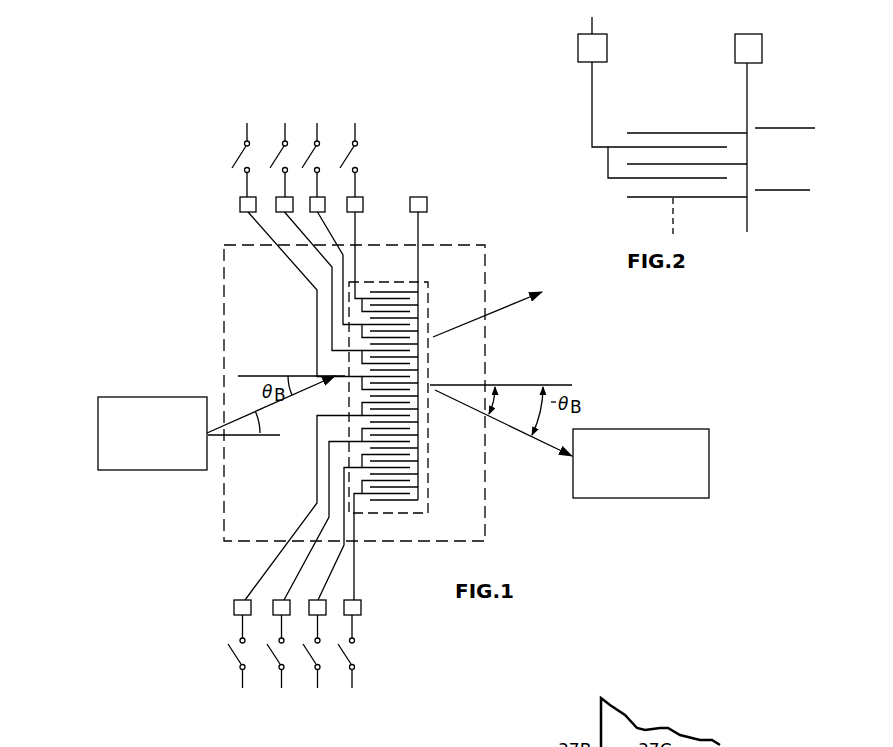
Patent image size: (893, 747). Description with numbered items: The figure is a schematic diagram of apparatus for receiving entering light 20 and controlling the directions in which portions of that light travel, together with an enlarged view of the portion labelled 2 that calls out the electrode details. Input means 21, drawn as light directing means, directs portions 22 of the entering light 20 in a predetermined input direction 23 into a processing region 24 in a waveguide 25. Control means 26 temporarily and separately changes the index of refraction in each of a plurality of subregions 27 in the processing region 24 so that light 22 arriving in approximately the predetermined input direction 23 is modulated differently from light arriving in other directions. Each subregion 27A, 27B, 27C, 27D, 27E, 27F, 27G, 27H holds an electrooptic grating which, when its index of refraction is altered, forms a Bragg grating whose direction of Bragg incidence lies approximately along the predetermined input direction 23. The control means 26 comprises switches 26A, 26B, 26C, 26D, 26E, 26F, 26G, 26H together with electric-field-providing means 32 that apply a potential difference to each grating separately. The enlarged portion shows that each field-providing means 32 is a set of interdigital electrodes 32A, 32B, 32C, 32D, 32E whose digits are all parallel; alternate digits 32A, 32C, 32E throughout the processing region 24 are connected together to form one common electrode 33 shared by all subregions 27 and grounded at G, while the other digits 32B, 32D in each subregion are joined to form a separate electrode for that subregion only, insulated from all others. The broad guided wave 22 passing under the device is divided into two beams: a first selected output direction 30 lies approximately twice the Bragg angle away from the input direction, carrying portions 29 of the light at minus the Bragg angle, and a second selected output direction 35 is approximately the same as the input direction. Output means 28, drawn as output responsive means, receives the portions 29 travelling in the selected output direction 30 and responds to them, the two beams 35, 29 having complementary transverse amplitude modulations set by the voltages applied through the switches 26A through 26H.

In FIG. 1, the portion of FIG. 1 2 is at (366, 175).
In FIG. 1, the entering light 20 is at (96, 433).
In FIG. 1, the input means 21 is at (162, 397).
In FIG. 1, the light portions 22 is at (258, 413).
In FIG. 1, the predetermined input direction 23 is at (270, 423).
In FIG. 1, the processing region 24 is at (400, 281).
In FIG. 1, the waveguide 25 is at (268, 320).
In FIG. 1, the control means 26 is at (286, 404).
In FIG. 1, the switch 26A is at (407, 123).
In FIG. 1, the switch 26B is at (327, 155).
In FIG. 1, the switch 26C is at (268, 150).
In FIG. 1, the switch 26D is at (233, 164).
In FIG. 1, the switch 26E is at (238, 668).
In FIG. 1, the switch 26F is at (267, 644).
In FIG. 1, the switch 26G is at (303, 644).
In FIG. 1, the switch 26H is at (343, 658).
In FIG. 1, the subregions 27 is at (408, 291).
In FIG. 1, the subregion 27A is at (467, 314).
In FIG. 2, the subregion 27A is at (775, 123).
In FIG. 1, the subregion 27B is at (458, 332).
In FIG. 2, the subregion 27B is at (738, 216).
In FIG. 1, the subregion 27C is at (468, 365).
In FIG. 1, the subregion 27D is at (468, 385).
In FIG. 1, the subregion 27E is at (453, 407).
In FIG. 1, the subregion 27F is at (466, 437).
In FIG. 1, the subregion 27G is at (468, 462).
In FIG. 1, the subregion 27H is at (468, 487).
In FIG. 1, the output means 28 is at (642, 429).
In FIG. 1, the deflected light portions 29 is at (537, 444).
In FIG. 1, the selected output direction 30 is at (496, 402).
In FIG. 2, the electric-field-providing means 32 is at (667, 146).
In FIG. 2, the interdigital electrode 32A is at (733, 132).
In FIG. 2, the interdigital electrode 32B is at (655, 147).
In FIG. 2, the interdigital electrode 32C is at (640, 165).
In FIG. 2, the interdigital electrode 32D is at (667, 180).
In FIG. 2, the interdigital electrode 32E is at (735, 198).
In FIG. 1, the common electrode 33 is at (419, 230).
In FIG. 2, the common electrode 33 is at (748, 92).
In FIG. 1, the second selected output direction 35 is at (490, 313).